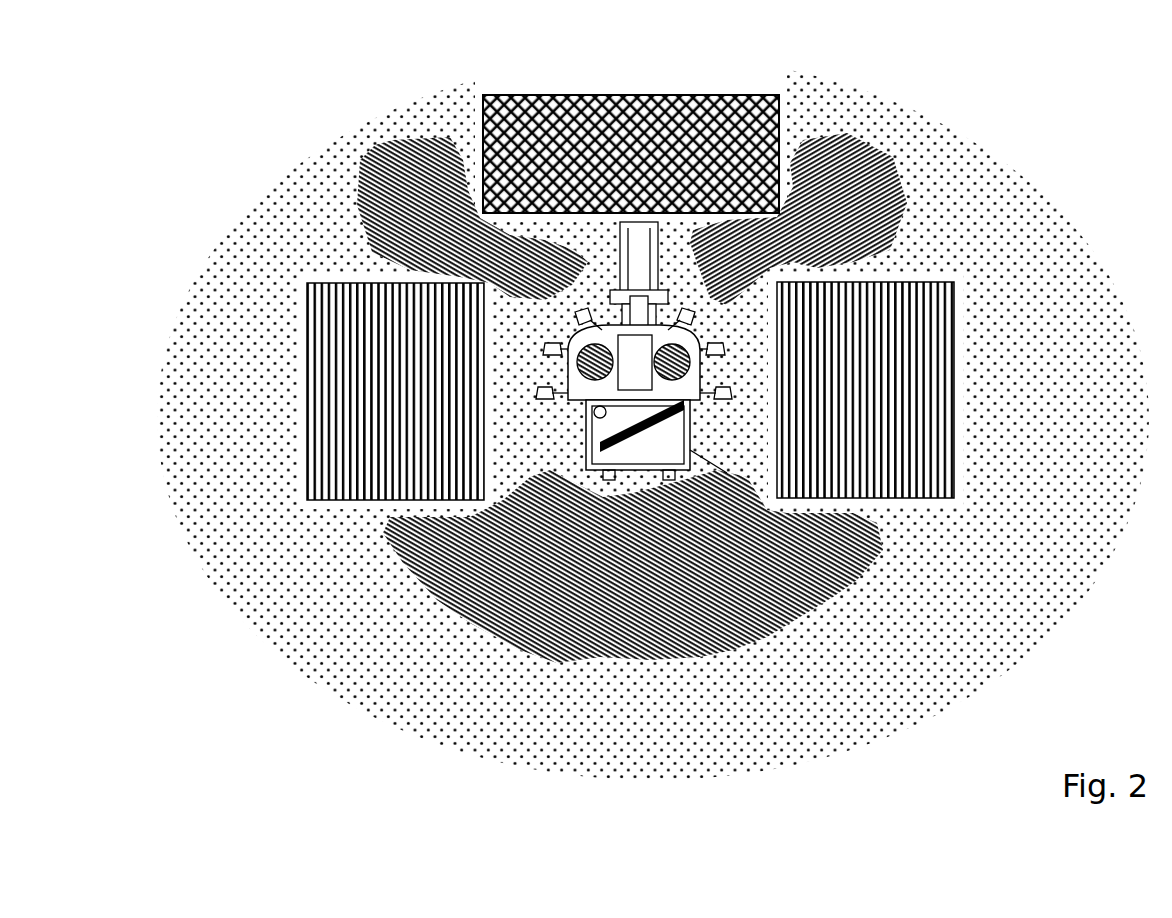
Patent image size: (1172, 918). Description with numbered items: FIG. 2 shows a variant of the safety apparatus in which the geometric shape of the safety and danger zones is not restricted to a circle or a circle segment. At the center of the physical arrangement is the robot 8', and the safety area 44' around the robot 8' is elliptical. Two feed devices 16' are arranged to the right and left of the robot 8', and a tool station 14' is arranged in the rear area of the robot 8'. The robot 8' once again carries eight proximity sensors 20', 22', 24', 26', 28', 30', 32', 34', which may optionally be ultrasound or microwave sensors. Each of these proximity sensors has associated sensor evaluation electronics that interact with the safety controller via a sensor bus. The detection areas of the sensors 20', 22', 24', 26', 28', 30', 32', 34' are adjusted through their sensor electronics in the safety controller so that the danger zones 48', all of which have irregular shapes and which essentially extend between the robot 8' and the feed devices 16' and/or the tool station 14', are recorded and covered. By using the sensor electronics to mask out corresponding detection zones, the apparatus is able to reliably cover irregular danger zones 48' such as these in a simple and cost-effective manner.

The robot 8' is at (655, 390).
The tool station 14' is at (631, 124).
The feed devices 16' is at (678, 328).
The proximity sensor 20' is at (517, 405).
The proximity sensor 22' is at (590, 362).
The proximity sensor 24' is at (563, 313).
The proximity sensor 26' is at (610, 276).
The proximity sensor 28' is at (667, 277).
The proximity sensor 30' is at (719, 306).
The proximity sensor 32' is at (753, 351).
The proximity sensor 34' is at (684, 433).
The safety area 44' is at (653, 418).
The danger zones 48' is at (660, 431).